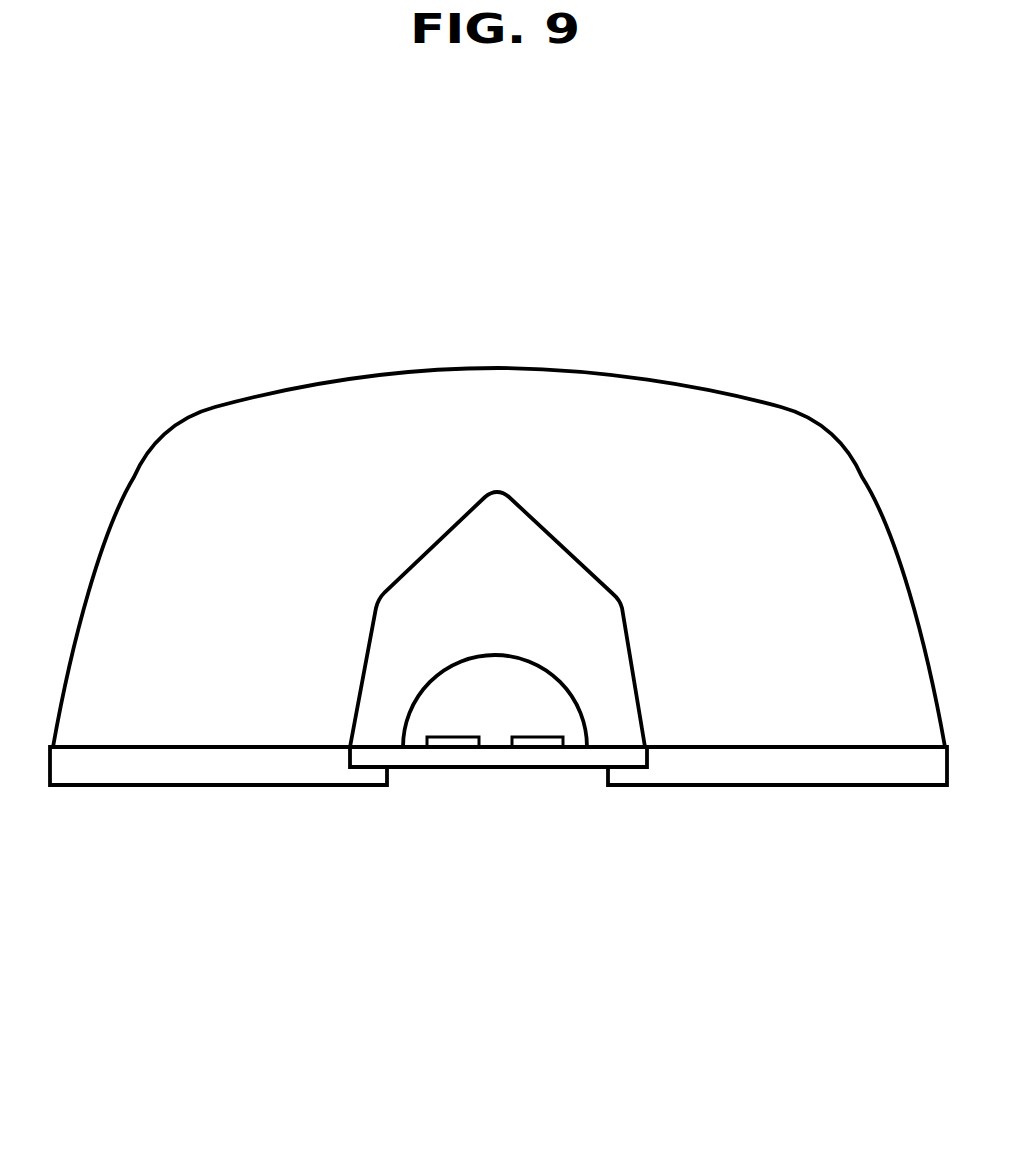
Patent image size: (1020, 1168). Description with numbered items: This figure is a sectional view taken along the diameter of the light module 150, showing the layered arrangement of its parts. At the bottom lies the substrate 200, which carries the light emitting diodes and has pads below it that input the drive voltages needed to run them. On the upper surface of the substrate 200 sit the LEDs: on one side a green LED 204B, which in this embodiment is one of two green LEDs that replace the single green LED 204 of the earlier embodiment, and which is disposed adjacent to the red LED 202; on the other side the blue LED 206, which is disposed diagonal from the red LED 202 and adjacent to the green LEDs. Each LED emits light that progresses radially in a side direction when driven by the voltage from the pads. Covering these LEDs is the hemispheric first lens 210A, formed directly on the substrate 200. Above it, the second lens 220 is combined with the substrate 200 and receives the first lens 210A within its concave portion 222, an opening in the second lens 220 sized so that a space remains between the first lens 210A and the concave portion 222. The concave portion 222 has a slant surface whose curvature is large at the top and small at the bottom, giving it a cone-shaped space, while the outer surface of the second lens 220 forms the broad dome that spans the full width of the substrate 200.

The light module 150 is at (918, 245).
The second lens 220 is at (388, 372).
The concave portion 222 is at (567, 540).
The first lens 210A is at (552, 670).
The substrate 200 is at (625, 760).
The green LED 204B is at (353, 892).
The red LED 202 is at (432, 750).
The blue LED 206 is at (647, 857).
The green LED 204 is at (549, 750).